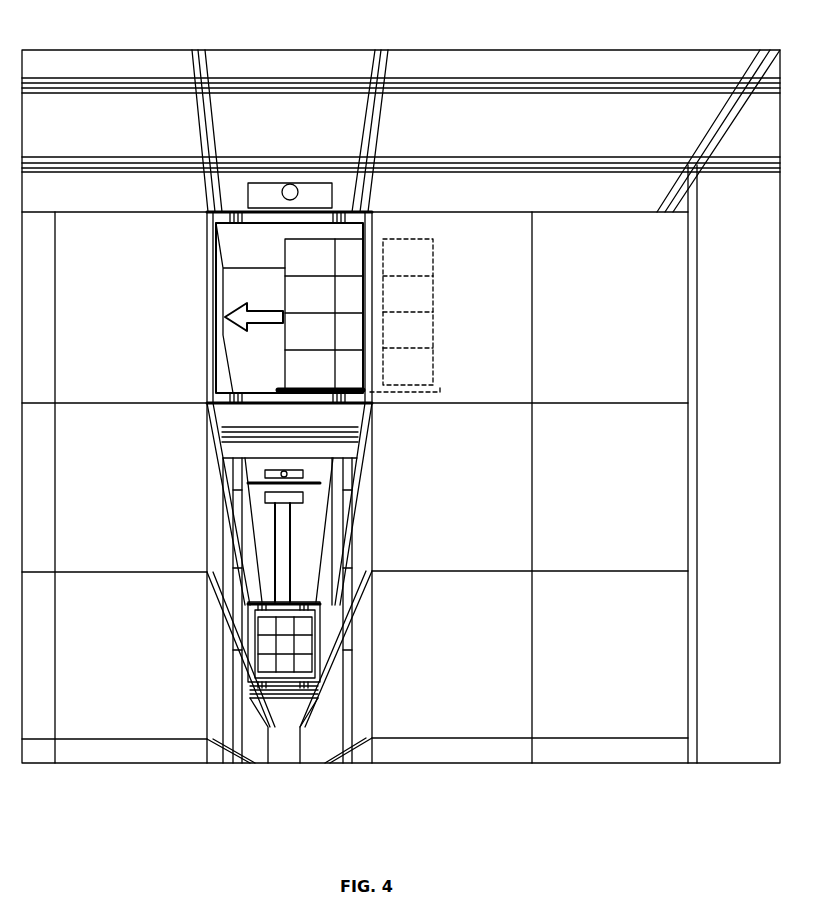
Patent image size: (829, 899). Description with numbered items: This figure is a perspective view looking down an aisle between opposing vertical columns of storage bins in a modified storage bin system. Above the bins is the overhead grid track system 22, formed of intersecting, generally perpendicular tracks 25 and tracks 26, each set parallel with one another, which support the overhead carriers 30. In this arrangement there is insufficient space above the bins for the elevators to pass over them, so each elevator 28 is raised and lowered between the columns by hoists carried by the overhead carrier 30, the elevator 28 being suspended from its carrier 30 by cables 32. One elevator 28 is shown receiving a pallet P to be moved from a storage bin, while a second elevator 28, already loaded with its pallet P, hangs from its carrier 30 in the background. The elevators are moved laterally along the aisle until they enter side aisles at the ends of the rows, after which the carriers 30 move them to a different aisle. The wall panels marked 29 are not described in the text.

The overhead grid track system 22 is at (478, 76).
The tracks 25 is at (146, 78).
The tracks 26 is at (205, 63).
The elevator 28 is at (208, 355).
The wall panel 29 is at (136, 334).
The overhead carrier 30 is at (208, 224).
The cables 32 is at (297, 552).
The pallet P is at (328, 393).